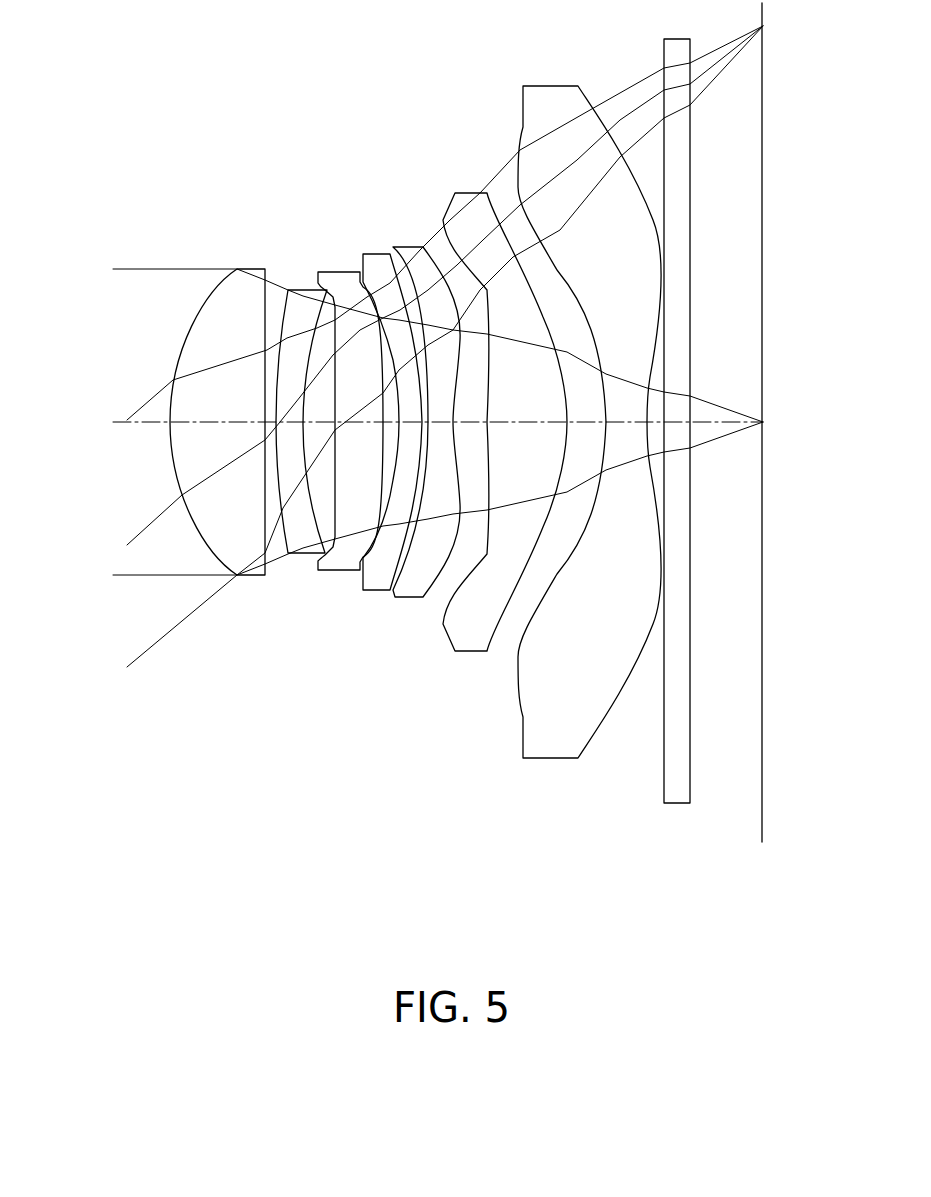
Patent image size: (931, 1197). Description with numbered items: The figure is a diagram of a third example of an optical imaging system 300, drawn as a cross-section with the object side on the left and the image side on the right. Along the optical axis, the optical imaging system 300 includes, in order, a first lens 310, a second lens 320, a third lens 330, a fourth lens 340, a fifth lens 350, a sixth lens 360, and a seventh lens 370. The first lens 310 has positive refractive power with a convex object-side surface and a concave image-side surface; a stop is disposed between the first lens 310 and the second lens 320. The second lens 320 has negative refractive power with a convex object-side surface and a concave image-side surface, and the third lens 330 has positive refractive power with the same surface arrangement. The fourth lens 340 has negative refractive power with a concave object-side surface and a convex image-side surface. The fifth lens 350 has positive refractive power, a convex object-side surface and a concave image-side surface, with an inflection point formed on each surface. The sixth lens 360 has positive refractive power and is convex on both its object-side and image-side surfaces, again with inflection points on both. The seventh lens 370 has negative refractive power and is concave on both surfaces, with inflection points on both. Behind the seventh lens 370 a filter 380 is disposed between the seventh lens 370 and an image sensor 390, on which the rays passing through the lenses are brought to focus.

The optical imaging system 300 is at (423, 127).
The first lens 310 is at (245, 581).
The second lens 320 is at (300, 555).
The third lens 330 is at (337, 573).
The fourth lens 340 is at (374, 589).
The fifth lens 350 is at (410, 598).
The sixth lens 360 is at (470, 651).
The seventh lens 370 is at (548, 758).
The filter 380 is at (675, 803).
The image sensor 390 is at (762, 818).